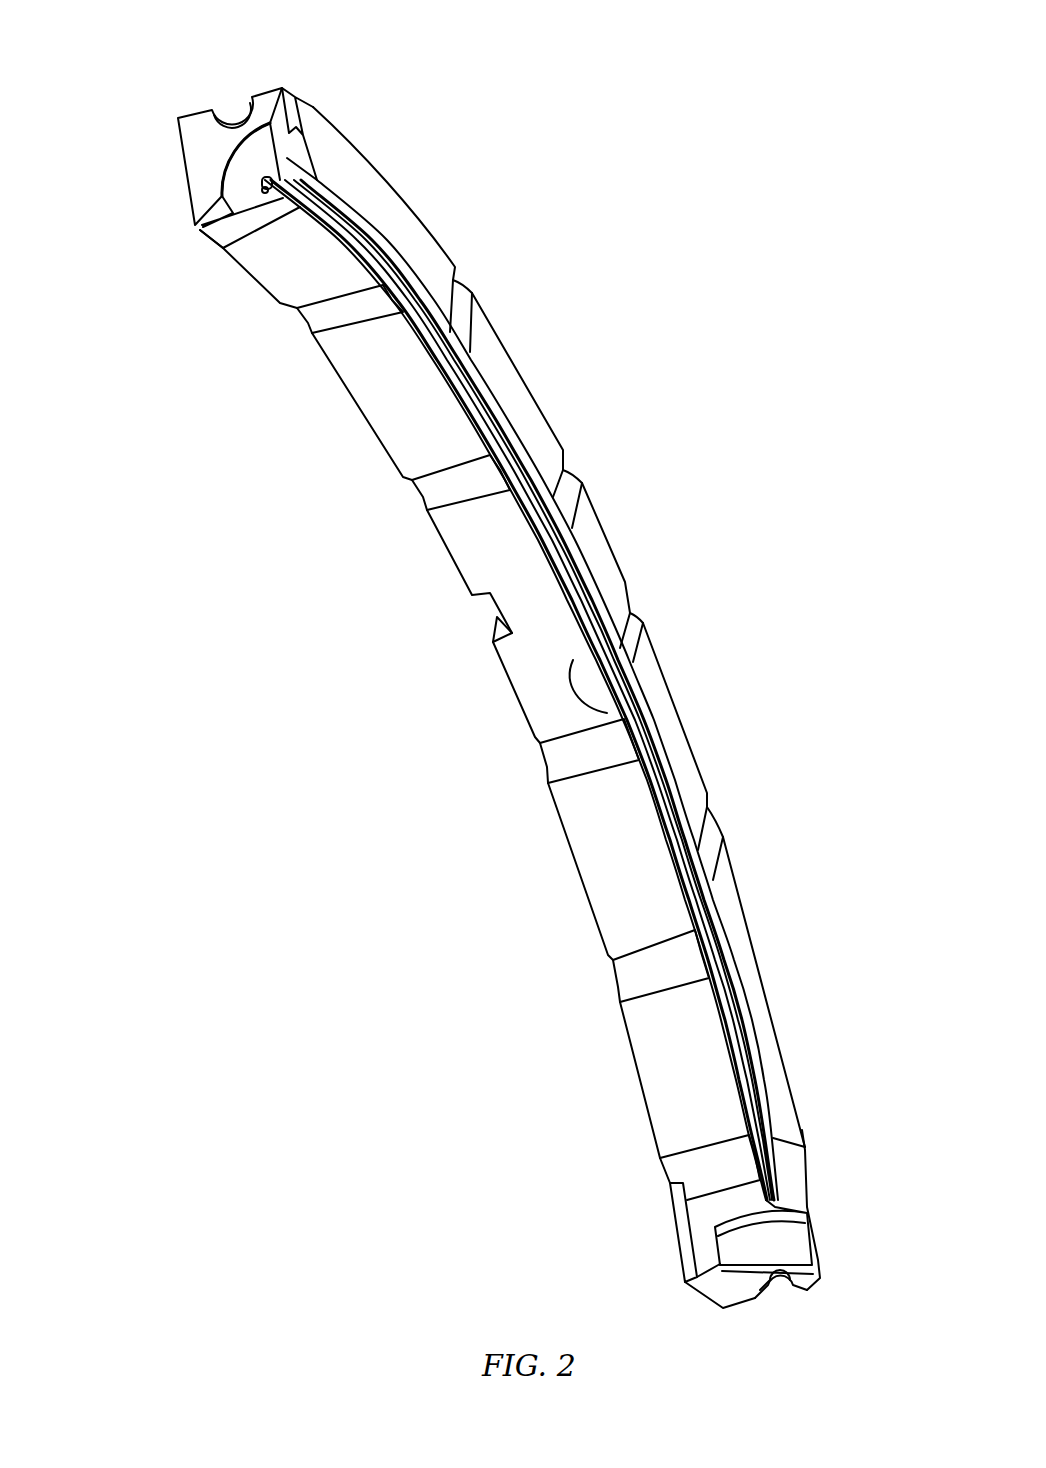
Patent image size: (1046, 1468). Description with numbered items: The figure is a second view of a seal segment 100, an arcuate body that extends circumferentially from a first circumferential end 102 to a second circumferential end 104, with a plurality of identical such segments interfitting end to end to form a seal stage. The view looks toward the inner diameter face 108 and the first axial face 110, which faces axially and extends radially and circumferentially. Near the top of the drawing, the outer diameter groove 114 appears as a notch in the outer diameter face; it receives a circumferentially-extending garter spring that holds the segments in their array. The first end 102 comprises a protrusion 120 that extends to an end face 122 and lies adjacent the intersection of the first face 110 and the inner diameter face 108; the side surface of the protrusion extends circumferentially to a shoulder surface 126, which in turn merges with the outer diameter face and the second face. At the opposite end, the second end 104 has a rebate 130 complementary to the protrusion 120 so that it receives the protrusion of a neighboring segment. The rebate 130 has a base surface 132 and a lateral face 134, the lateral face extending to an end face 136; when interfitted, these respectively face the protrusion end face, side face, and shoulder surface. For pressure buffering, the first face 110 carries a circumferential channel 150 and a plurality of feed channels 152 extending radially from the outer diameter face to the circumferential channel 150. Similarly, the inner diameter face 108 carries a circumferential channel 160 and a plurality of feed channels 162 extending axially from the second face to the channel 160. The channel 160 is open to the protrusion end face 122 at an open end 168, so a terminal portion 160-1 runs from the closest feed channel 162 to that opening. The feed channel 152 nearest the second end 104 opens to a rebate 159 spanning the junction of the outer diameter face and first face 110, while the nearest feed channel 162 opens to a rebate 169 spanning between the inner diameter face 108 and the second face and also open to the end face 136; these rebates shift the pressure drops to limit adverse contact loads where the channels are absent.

The seal segment 100 is at (652, 310).
The first circumferential end 102 is at (431, 702).
The second circumferential end 104 is at (764, 1244).
The inner diameter face 108 is at (607, 715).
The first axial face 110 is at (677, 750).
The outer diameter groove 114 is at (232, 100).
The protrusion 120 is at (236, 187).
The end face 122 is at (263, 167).
The shoulder surface 126 is at (203, 152).
The rebate 130 is at (797, 1245).
The base surface 132 is at (768, 1218).
The lateral face 134 is at (730, 1250).
The end face 136 is at (717, 1287).
The circumferential channel 150 is at (720, 922).
The feed channels 152 is at (708, 815).
The rebate 159 is at (837, 1274).
The circumferential channel 160 is at (570, 600).
The terminal portion 160-1 is at (278, 209).
The feed channels 162 is at (207, 250).
The open end 168 is at (266, 202).
The rebate 169 is at (677, 1225).